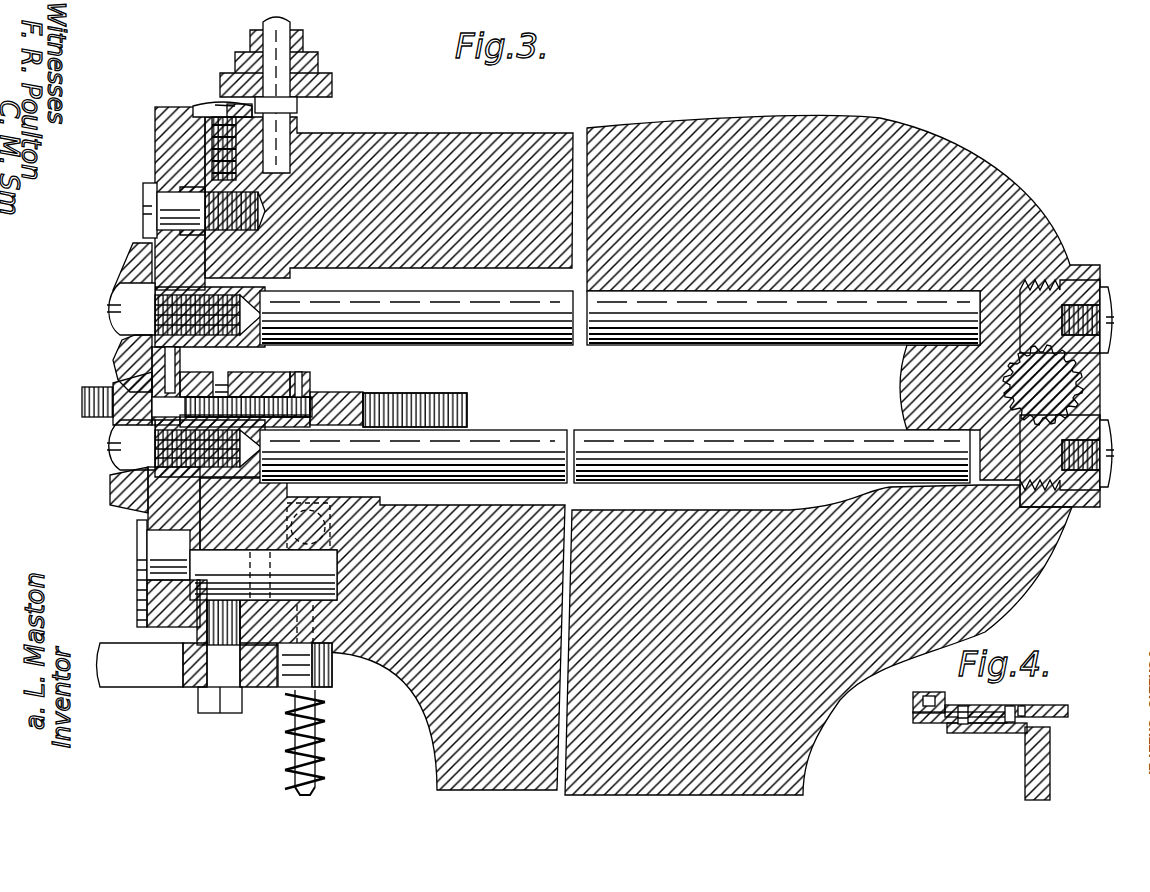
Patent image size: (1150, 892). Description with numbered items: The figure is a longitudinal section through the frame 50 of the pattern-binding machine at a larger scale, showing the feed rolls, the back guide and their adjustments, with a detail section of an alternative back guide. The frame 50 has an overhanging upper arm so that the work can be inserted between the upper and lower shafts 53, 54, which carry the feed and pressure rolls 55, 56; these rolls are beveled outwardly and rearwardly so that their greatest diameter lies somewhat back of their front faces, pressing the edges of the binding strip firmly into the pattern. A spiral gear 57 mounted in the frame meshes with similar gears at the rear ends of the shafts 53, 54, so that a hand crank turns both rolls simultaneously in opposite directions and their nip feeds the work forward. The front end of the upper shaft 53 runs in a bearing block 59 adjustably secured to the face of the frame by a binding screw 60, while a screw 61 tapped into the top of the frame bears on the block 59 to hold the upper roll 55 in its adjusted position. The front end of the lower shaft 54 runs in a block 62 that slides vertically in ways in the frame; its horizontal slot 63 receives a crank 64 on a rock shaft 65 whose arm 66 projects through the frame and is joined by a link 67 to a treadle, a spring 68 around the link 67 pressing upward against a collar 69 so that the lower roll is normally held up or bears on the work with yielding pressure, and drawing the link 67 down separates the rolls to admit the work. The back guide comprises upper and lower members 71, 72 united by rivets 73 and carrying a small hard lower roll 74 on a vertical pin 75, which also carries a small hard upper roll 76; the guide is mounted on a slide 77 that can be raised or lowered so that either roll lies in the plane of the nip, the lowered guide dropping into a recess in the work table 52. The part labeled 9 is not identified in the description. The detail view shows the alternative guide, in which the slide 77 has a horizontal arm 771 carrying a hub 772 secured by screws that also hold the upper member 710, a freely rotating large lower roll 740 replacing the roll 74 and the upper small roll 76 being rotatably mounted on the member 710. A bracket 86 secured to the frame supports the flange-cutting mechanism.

In FIG. 3, the shaft 9 is at (238, 374).
In FIG. 3, the frame 50 is at (730, 687).
In FIG. 3, the table 52 is at (82, 400).
In FIG. 3, the upper shaft 53 is at (714, 342).
In FIG. 3, the lower shaft 54 is at (711, 440).
In FIG. 3, the upper feed and pressure roll 55 is at (118, 274).
In FIG. 3, the lower feed and pressure roll 56 is at (110, 430).
In FIG. 3, the spiral gear 57 is at (1090, 380).
In FIG. 3, the bearing block 59 is at (156, 155).
In FIG. 3, the binding screw 60 is at (150, 205).
In FIG. 3, the screw 61 is at (212, 103).
In FIG. 3, the bearing block 62 is at (147, 515).
In FIG. 3, the horizontal slot 63 is at (142, 540).
In FIG. 3, the crank 64 is at (157, 552).
In FIG. 3, the rock shaft 65 is at (147, 593).
In FIG. 3, the arm 66 is at (330, 512).
In FIG. 3, the link 67 is at (314, 775).
In FIG. 3, the spring 68 is at (323, 731).
In FIG. 3, the collar 69 is at (333, 677).
In FIG. 3, the upper member of back guide 71 is at (279, 372).
In FIG. 3, the lower member of back guide 72 is at (312, 394).
In FIG. 3, the rivet 73 is at (308, 372).
In FIG. 3, the small hard lower roll 74 is at (150, 380).
In FIG. 3, the vertical pin or axle 75 is at (140, 358).
In FIG. 3, the small hard upper roll 76 is at (184, 371).
In FIG. 4, the small hard upper roll 76 is at (914, 699).
In FIG. 4, the slide 77 is at (1030, 777).
In FIG. 3, the bracket 86 is at (195, 684).
In FIG. 4, the upper member of back guide 710 is at (1068, 712).
In FIG. 4, the large lower roll 740 is at (918, 719).
In FIG. 4, the horizontal arm 771 is at (1020, 735).
In FIG. 4, the hub 772 is at (998, 708).